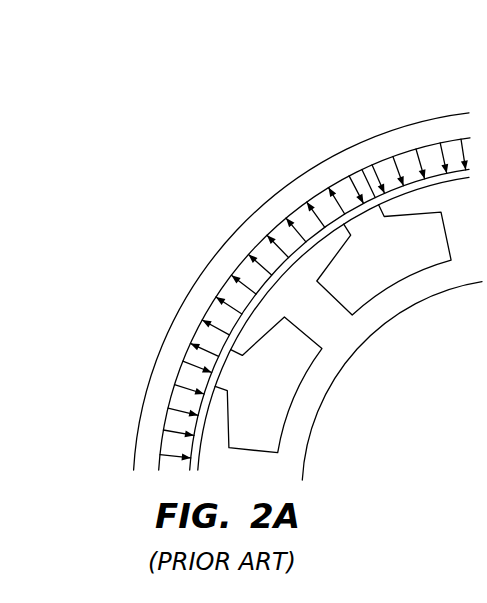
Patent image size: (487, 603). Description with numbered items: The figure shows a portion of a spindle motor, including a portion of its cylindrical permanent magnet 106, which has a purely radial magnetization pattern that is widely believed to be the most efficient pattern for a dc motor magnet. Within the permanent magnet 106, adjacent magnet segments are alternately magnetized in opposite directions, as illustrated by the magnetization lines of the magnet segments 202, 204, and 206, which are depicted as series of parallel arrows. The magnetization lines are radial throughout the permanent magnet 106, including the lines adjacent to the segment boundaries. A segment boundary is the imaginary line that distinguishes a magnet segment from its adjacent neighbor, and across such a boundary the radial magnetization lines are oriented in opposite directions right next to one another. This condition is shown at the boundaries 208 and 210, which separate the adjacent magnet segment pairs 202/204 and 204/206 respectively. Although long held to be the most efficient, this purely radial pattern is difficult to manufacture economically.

The permanent magnet 106 is at (223, 282).
The magnet segment 202 is at (158, 323).
The magnet segment 204 is at (275, 163).
The magnet segment 206 is at (322, 152).
The boundary 208 is at (210, 363).
The boundary 210 is at (378, 204).